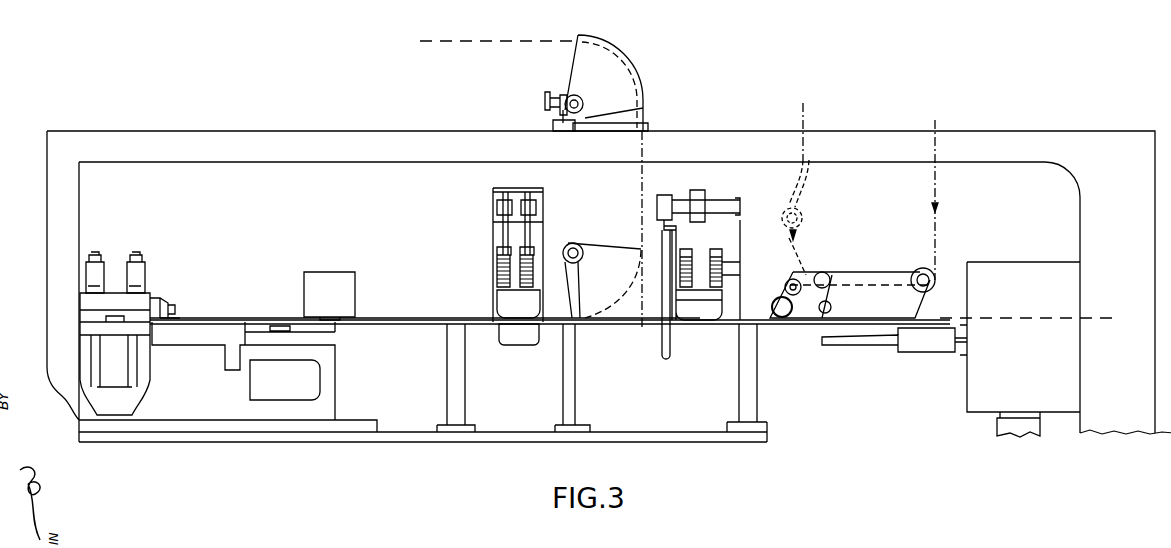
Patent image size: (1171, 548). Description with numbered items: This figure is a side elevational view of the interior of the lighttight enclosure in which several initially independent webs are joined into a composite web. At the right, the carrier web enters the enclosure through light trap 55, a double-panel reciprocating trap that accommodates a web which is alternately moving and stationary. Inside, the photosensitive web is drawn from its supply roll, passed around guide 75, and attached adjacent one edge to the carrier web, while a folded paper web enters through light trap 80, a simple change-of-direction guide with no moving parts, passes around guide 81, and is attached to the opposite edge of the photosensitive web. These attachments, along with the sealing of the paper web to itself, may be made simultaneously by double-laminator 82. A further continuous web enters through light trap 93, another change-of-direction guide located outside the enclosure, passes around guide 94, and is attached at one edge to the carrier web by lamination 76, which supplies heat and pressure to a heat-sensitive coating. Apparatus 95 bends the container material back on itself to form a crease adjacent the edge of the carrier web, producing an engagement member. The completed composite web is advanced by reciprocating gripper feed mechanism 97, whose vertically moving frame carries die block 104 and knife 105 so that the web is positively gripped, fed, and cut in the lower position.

The light trap 55 is at (1018, 266).
The guide 75 is at (850, 282).
The lamination 76 is at (515, 300).
The light trap 80 is at (801, 180).
The guide 81 is at (790, 281).
The double-laminator 82 is at (705, 312).
The light trap 93 is at (588, 64).
The guide 94 is at (612, 262).
The apparatus 95 is at (344, 293).
The reciprocating gripper feed mechanism 97 is at (172, 318).
The die block 104 is at (116, 312).
The knife 105 is at (75, 305).